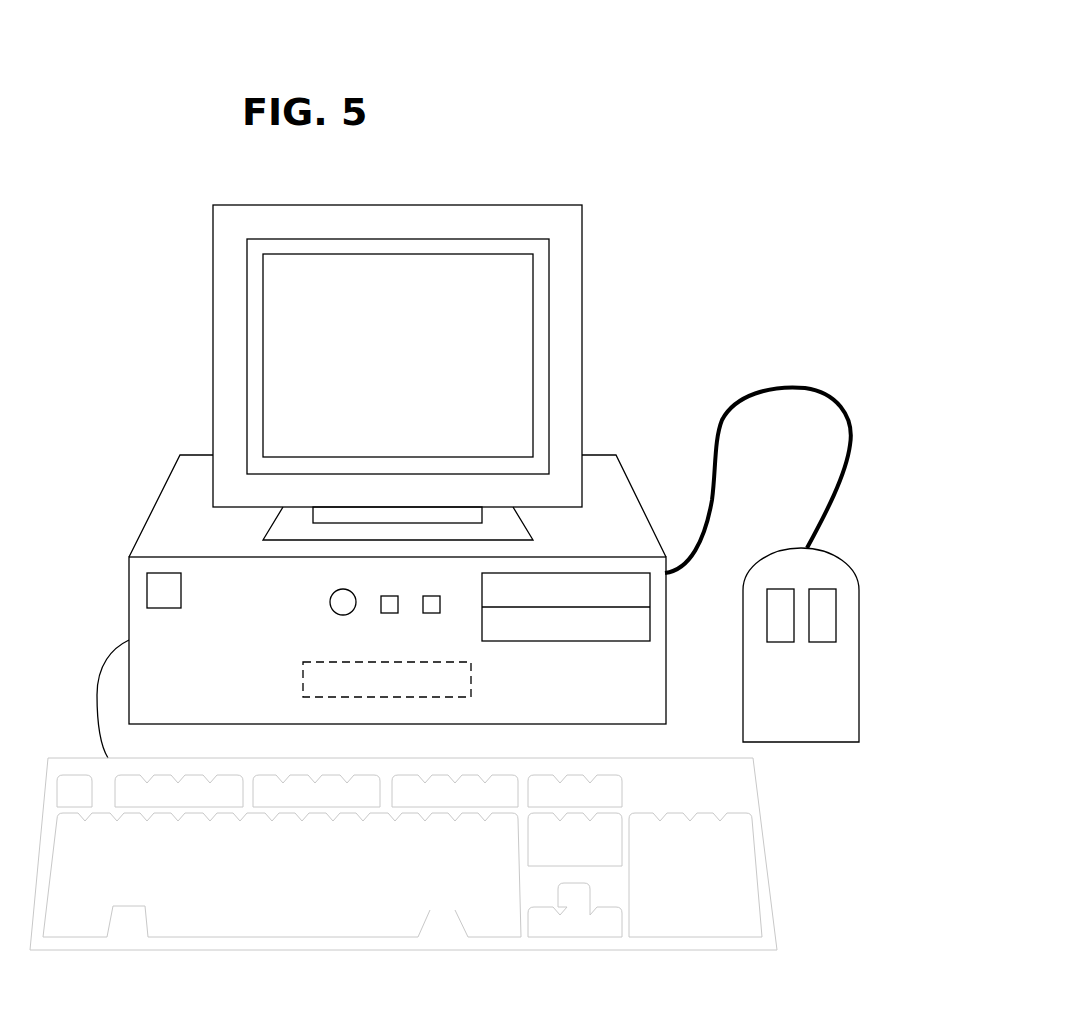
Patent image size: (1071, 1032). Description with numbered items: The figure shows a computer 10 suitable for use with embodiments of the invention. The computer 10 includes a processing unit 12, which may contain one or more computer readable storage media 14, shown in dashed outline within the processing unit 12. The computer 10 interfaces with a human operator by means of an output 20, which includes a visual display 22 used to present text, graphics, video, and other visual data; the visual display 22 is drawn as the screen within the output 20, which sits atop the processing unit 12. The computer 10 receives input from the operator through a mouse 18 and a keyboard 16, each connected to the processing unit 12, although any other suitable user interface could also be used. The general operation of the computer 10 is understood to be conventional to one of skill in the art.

The computer 10 is at (665, 76).
The processing unit 12 is at (666, 638).
The computer readable storage media 14 is at (471, 677).
The keyboard 16 is at (768, 923).
The mouse 18 is at (859, 645).
The output 20 is at (420, 372).
The visual display 22 is at (397, 355).